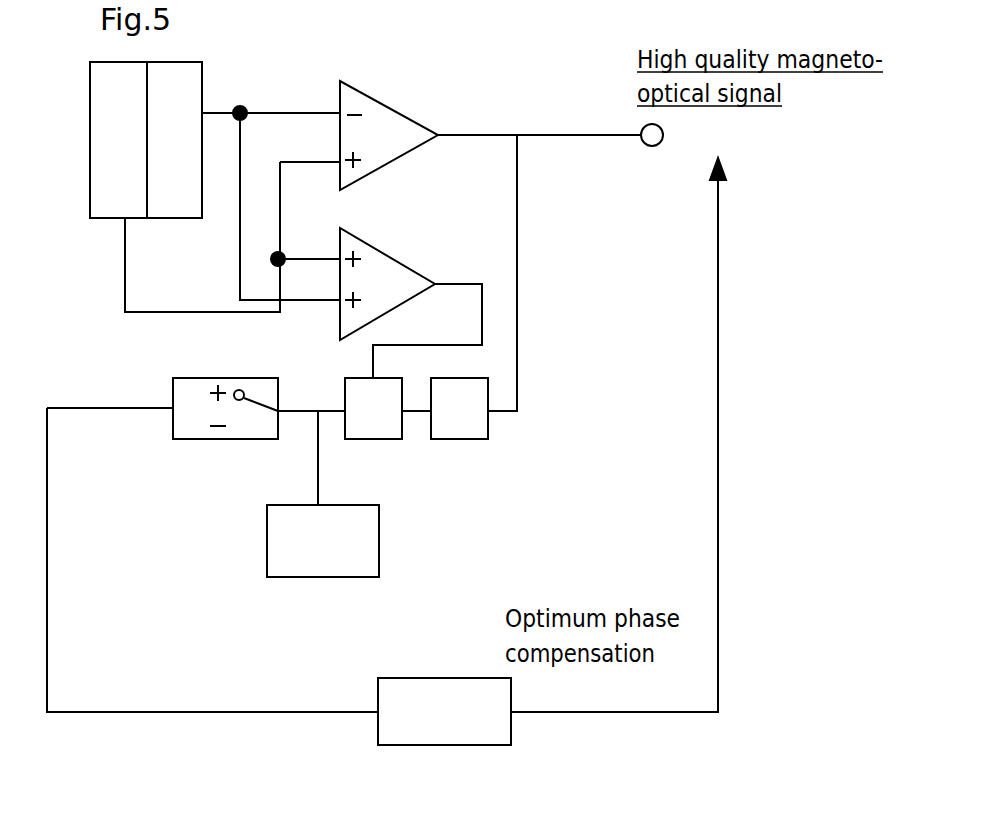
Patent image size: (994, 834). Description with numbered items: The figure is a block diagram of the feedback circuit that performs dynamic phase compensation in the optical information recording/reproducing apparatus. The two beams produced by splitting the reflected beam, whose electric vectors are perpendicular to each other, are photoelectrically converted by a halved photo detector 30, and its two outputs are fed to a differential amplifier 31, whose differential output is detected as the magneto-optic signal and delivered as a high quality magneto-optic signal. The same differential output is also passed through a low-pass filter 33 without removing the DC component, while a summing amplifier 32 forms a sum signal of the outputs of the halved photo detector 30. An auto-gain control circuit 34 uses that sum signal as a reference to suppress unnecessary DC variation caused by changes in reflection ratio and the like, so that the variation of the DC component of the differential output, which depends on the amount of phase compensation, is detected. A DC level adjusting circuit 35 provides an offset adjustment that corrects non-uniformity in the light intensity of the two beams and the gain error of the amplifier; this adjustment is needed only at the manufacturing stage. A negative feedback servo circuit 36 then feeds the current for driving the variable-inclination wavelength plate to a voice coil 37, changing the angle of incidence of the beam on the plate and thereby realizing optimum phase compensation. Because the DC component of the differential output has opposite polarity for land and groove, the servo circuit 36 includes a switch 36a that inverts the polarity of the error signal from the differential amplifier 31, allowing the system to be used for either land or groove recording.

The halved photo detector 30 is at (95, 218).
The differential amplifier 31 is at (380, 113).
The summing amplifier 32 is at (363, 273).
The low-pass filter 33 is at (448, 423).
The auto-gain control circuit 34 is at (378, 423).
The DC level adjusting circuit 35 is at (297, 523).
The negative feedback servo circuit 36 is at (173, 422).
The switch 36a is at (257, 405).
The voice coil 37 is at (430, 712).